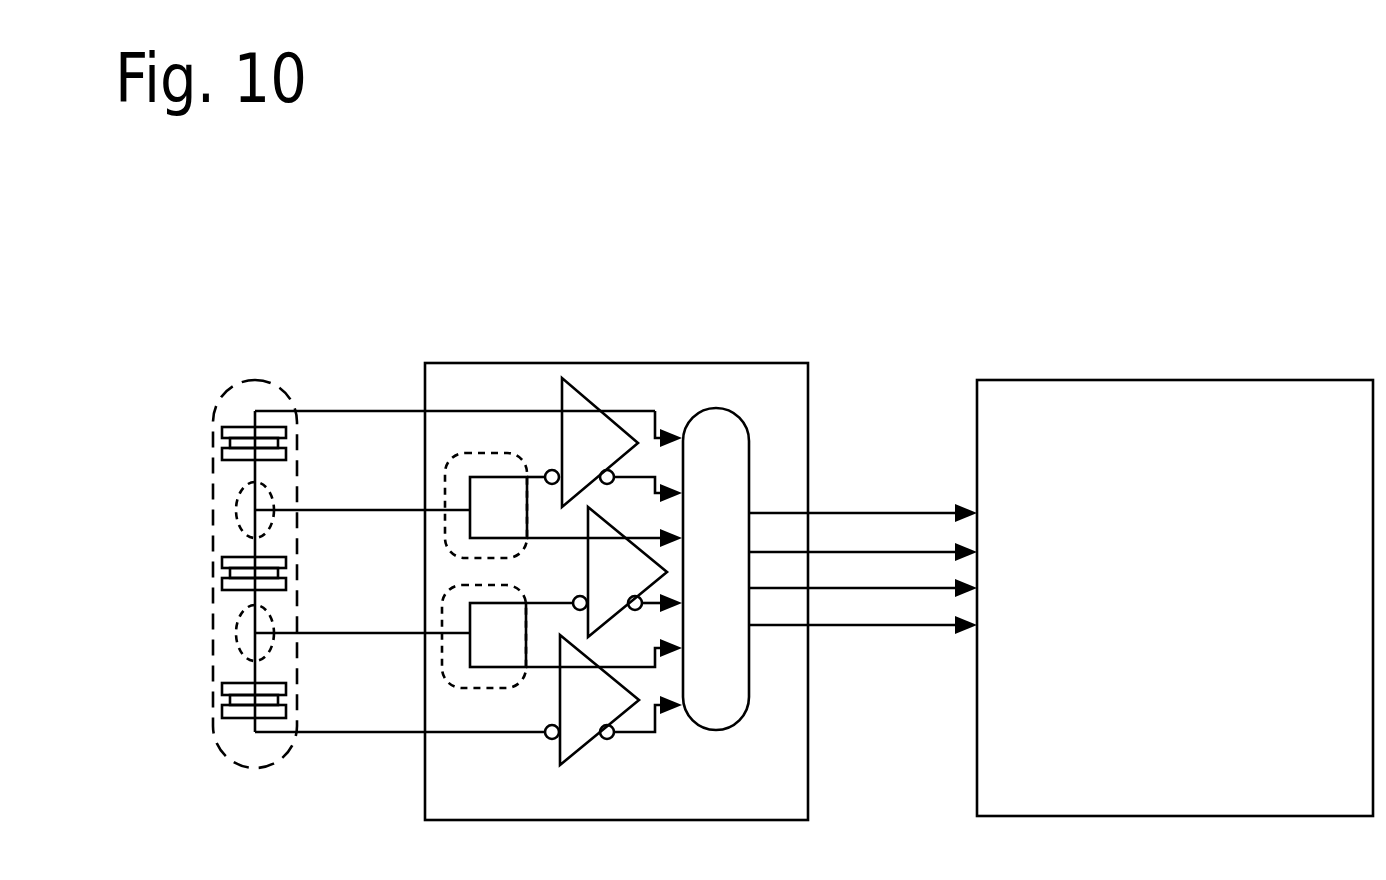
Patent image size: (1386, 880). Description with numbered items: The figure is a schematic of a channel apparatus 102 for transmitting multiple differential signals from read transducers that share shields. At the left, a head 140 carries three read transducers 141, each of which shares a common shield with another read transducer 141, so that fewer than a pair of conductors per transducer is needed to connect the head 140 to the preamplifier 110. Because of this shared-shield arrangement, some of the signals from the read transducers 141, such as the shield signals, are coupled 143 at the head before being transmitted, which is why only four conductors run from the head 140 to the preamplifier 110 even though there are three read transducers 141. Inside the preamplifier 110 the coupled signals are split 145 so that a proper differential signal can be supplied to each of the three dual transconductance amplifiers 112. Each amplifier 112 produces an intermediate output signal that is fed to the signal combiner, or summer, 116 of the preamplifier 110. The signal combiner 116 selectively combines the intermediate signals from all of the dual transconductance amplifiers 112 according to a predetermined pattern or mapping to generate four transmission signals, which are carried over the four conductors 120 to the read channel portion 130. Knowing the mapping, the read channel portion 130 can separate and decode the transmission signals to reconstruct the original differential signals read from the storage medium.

The channel apparatus 102 is at (262, 236).
The head 140 is at (252, 366).
The read transducers 141 is at (217, 460).
The coupled signals 143 is at (286, 605).
The split signals 145 is at (444, 580).
The preamplifier 110 is at (642, 350).
The dual transconductance amplifiers 112 is at (560, 635).
The signal combiner 116 is at (722, 408).
The conductors 120 is at (870, 444).
The read channel portion 130 is at (1157, 366).